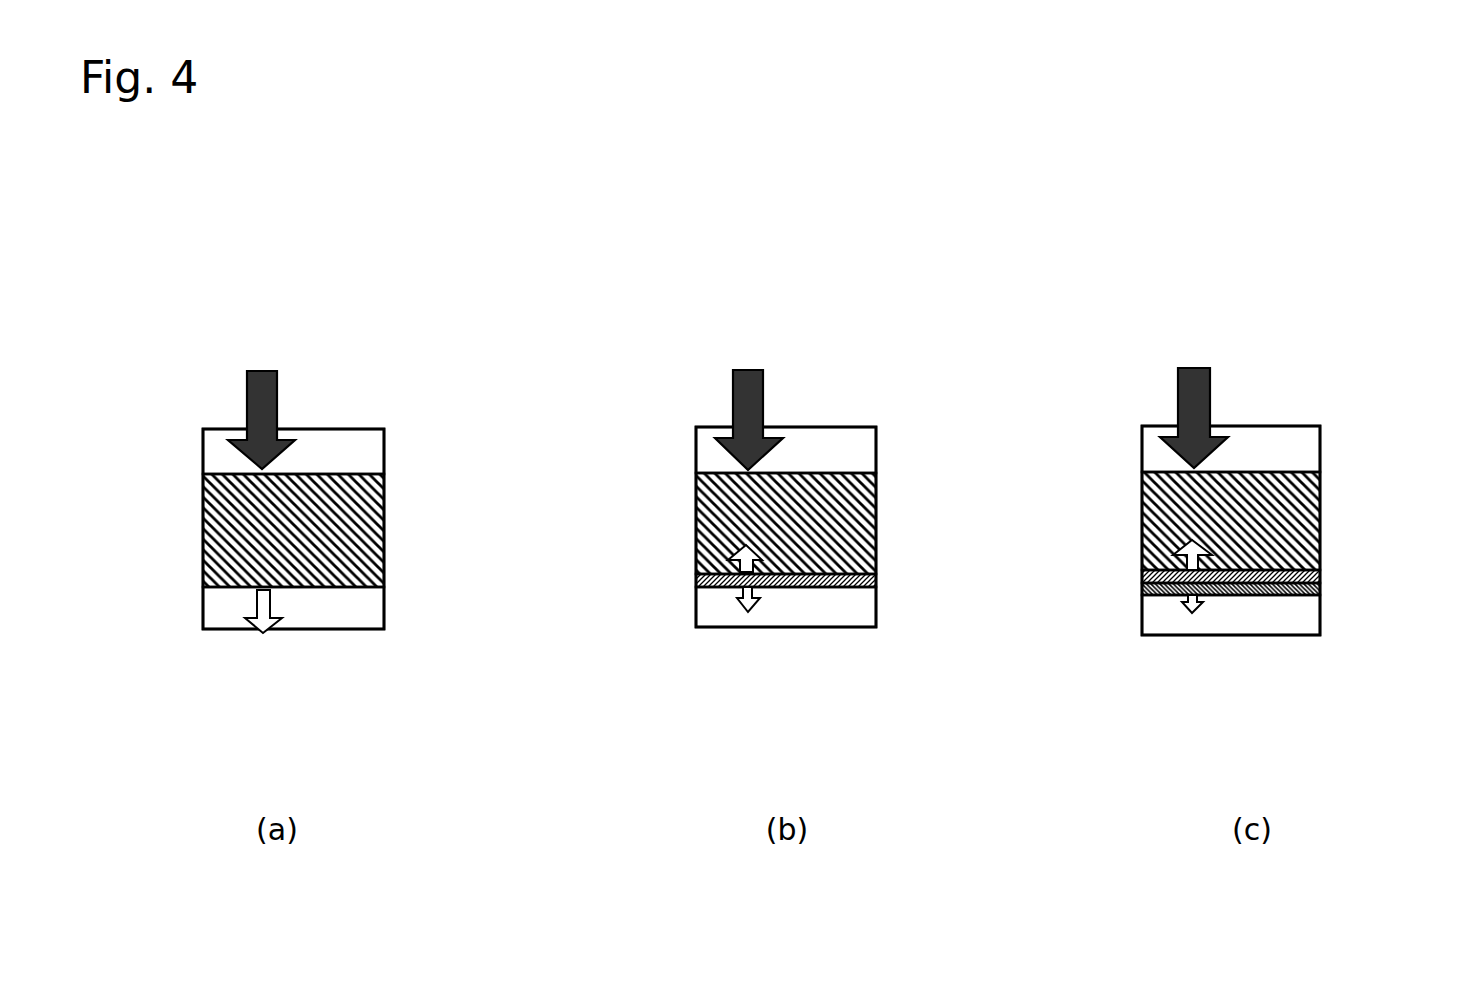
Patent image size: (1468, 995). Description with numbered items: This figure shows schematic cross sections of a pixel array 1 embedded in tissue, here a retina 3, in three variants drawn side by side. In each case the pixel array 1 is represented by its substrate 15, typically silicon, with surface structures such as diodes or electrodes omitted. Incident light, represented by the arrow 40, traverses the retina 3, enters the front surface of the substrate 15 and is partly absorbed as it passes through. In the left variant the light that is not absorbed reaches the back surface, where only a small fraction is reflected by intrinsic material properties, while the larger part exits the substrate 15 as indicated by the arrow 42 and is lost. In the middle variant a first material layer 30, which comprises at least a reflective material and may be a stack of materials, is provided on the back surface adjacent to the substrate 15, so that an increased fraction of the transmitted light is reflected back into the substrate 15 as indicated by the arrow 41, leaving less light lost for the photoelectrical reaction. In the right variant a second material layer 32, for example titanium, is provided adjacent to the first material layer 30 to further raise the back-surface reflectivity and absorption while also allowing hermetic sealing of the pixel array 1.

The pixel array 1 is at (192, 490).
The retina 3 is at (1410, 505).
The substrate 15 is at (1408, 572).
The first material layer 30 is at (1412, 637).
The second material layer 32 is at (1320, 590).
The arrow representing incident light 40 is at (1210, 398).
The arrow representing reflected light 41 is at (1182, 563).
The arrow representing exiting light 42 is at (1185, 603).